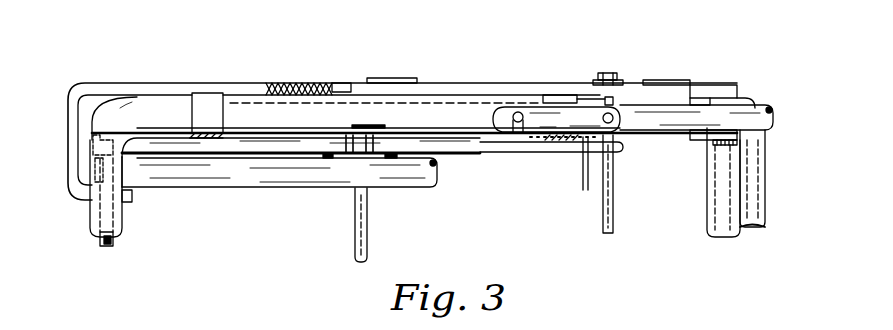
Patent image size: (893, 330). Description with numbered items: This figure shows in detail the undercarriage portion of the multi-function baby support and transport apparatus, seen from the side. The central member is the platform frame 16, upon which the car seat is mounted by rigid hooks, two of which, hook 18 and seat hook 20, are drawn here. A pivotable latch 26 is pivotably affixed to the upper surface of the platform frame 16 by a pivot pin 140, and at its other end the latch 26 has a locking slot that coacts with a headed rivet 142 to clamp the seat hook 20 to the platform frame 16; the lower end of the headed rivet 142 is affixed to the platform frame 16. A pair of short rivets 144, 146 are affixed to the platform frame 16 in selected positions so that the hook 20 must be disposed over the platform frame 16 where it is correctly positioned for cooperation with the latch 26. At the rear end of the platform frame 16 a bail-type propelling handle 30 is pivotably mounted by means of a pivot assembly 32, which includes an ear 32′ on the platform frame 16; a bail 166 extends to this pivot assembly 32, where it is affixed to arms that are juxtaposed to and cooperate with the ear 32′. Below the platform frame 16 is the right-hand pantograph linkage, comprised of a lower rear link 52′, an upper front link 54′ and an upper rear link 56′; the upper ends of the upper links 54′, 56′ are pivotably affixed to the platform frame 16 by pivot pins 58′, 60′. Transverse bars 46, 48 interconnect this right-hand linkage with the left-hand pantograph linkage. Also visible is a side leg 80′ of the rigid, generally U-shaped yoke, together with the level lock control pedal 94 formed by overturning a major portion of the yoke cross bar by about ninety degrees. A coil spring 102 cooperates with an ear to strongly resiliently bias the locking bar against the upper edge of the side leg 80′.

The platform frame 16 is at (92, 221).
The rigid hook 18 is at (205, 98).
The seat hook 20 is at (557, 97).
The pivotable latch 26 is at (577, 117).
The bail-type propelling handle 30 is at (760, 117).
The pivot assembly 32 is at (703, 140).
The ear 32′ is at (717, 108).
The transverse bar 46 is at (367, 232).
The transverse bar 48 is at (603, 220).
The lower rear link 52′ is at (222, 180).
The upper front link 54′ is at (257, 147).
The upper rear link 56′ is at (623, 146).
The pivot pin 58′ is at (327, 158).
The pivot pin 60′ is at (398, 158).
The side leg 80′ is at (110, 88).
The level lock control pedal 94 is at (753, 227).
The coil spring 102 is at (313, 83).
The pivot pin 140 is at (632, 110).
The headed rivet 142 is at (513, 135).
The short rivet 144 is at (537, 135).
The short rivet 146 is at (585, 190).
The bail 166 is at (753, 209).